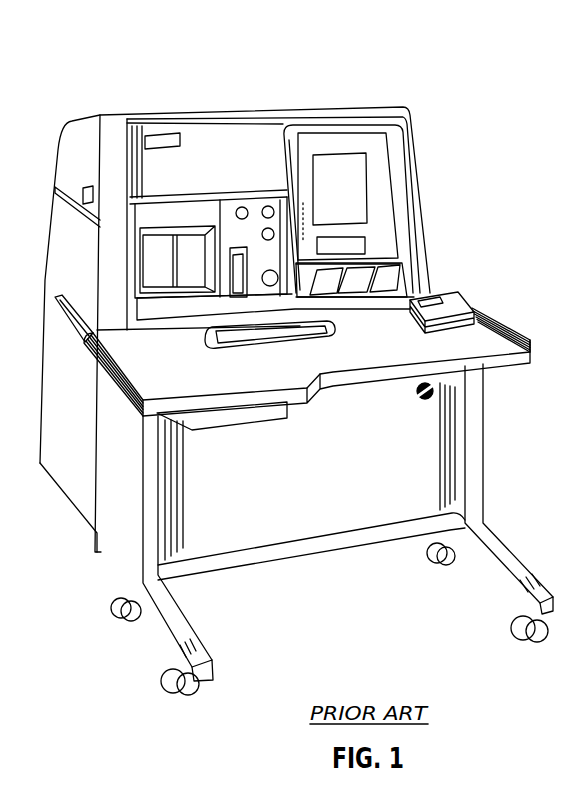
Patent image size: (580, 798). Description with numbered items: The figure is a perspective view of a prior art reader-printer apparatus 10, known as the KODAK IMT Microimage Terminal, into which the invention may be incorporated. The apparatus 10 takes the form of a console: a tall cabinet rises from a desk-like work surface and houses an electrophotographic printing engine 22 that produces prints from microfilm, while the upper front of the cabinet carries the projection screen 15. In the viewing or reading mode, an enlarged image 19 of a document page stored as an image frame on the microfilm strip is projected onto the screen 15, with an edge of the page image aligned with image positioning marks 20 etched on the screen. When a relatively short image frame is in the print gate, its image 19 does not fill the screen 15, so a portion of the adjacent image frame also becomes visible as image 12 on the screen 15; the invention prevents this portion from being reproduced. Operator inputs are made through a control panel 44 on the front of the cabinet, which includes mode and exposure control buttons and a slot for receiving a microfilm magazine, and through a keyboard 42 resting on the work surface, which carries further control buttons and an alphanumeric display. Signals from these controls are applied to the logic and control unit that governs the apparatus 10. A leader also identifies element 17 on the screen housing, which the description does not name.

The reader-printer apparatus 10 is at (410, 101).
The electrophotographic printing engine 22 is at (250, 105).
The image positioning marks 20 is at (365, 153).
The projection screen 15 is at (373, 214).
The bezel edge panel 17 is at (292, 217).
The image 19 is at (345, 200).
The image 12 is at (364, 247).
The keyboard 42 is at (459, 298).
The control panel 44 is at (257, 213).